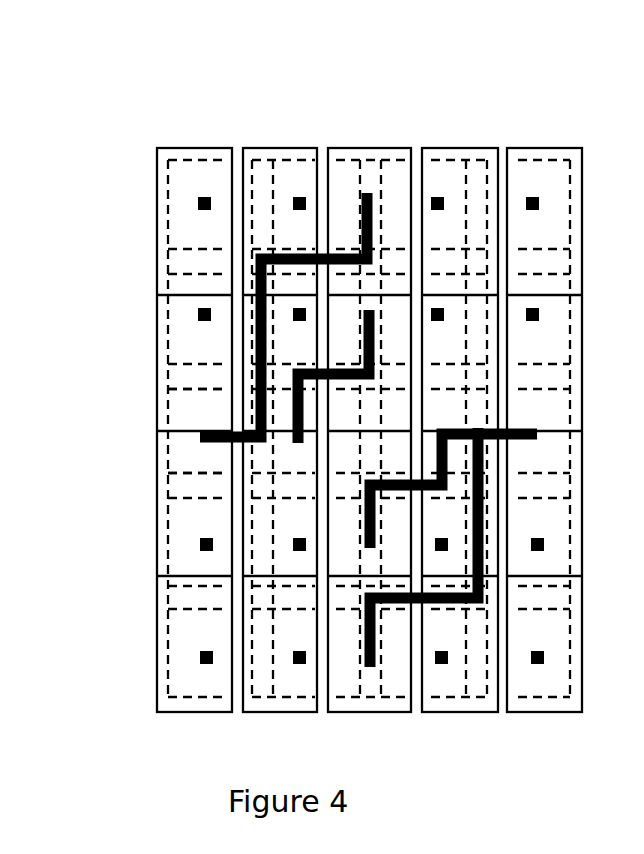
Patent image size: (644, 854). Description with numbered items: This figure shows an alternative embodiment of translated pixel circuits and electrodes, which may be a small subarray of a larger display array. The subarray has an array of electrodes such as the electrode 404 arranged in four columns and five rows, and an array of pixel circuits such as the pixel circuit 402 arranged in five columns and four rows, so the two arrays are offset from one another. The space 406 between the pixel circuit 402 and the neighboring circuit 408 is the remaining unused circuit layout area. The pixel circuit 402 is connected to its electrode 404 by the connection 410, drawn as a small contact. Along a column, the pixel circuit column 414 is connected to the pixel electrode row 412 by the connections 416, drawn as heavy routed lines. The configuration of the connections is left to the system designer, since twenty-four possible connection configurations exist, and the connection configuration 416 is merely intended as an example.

The pixel circuit 402 is at (166, 220).
The electrode 404 is at (168, 226).
The space 406 is at (257, 138).
The circuit 408 is at (283, 148).
The connection 410 is at (197, 203).
The pixel electrode row 412 is at (170, 410).
The pixel circuit column 414 is at (365, 147).
The connections 416 is at (365, 597).